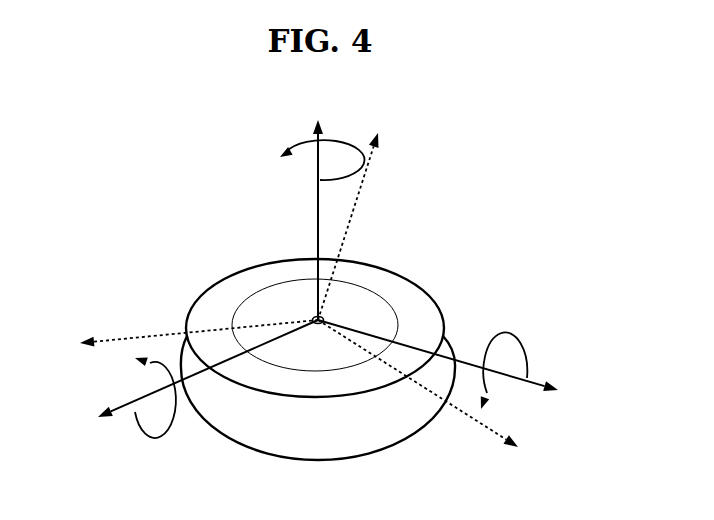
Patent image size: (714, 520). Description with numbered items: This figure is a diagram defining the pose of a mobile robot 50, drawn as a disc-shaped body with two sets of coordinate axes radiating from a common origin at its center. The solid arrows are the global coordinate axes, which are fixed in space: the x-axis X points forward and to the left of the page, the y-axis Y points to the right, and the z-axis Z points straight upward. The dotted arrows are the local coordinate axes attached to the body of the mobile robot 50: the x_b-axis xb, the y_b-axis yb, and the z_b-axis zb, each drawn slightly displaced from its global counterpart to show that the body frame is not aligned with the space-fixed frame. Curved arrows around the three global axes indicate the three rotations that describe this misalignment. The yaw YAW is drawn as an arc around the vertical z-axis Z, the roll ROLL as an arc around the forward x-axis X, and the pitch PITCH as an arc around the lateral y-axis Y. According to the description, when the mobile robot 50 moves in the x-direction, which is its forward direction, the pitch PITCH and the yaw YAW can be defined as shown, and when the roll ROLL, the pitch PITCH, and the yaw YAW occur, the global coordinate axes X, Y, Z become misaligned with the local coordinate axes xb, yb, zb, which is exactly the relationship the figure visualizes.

The mobile robot 50 is at (367, 296).
The x-axis X is at (195, 381).
The y-axis Y is at (451, 367).
The z-axis Z is at (316, 206).
The x_b-axis xb is at (187, 337).
The y_b-axis yb is at (428, 399).
The z_b-axis zb is at (356, 210).
The yaw YAW is at (294, 160).
The roll ROLL is at (165, 413).
The pitch PITCH is at (514, 354).